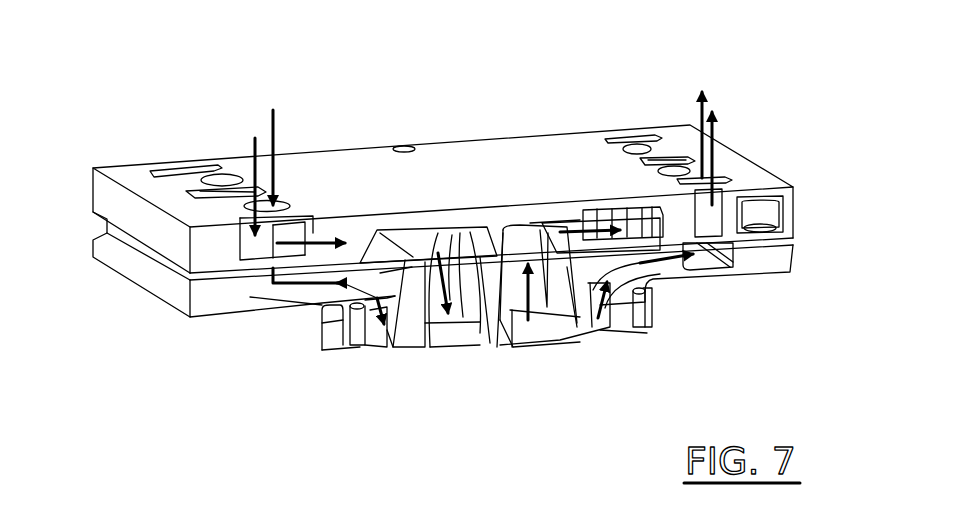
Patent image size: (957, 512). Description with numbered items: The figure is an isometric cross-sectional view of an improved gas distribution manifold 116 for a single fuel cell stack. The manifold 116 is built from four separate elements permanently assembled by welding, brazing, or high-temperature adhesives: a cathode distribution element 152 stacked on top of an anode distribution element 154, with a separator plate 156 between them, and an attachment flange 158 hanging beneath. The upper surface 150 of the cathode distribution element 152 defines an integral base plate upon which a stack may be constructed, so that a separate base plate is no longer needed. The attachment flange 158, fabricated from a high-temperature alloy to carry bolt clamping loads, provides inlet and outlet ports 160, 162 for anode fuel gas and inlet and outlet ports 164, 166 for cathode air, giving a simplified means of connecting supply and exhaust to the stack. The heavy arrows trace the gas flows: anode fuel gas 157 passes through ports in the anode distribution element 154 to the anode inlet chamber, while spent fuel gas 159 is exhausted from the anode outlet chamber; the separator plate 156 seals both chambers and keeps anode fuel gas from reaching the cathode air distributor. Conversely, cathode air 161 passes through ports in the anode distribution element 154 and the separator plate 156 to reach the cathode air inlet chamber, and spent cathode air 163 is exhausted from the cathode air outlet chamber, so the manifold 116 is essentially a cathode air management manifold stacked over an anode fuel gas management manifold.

The gas distribution manifold 116 is at (568, 126).
The upper surface 150 is at (455, 157).
The cathode distribution element 152 is at (797, 192).
The anode distribution element 154 is at (786, 276).
The separator plate 156 is at (794, 240).
The anode fuel gas 157 is at (717, 150).
The attachment flange 158 is at (320, 336).
The spent fuel gas 159 is at (281, 140).
The anode fuel gas inlet port 160 is at (596, 333).
The cathode air 161 is at (694, 103).
The anode fuel gas outlet port 162 is at (383, 348).
The spent cathode air 163 is at (254, 143).
The cathode air inlet port 164 is at (532, 337).
The cathode air outlet port 166 is at (447, 342).